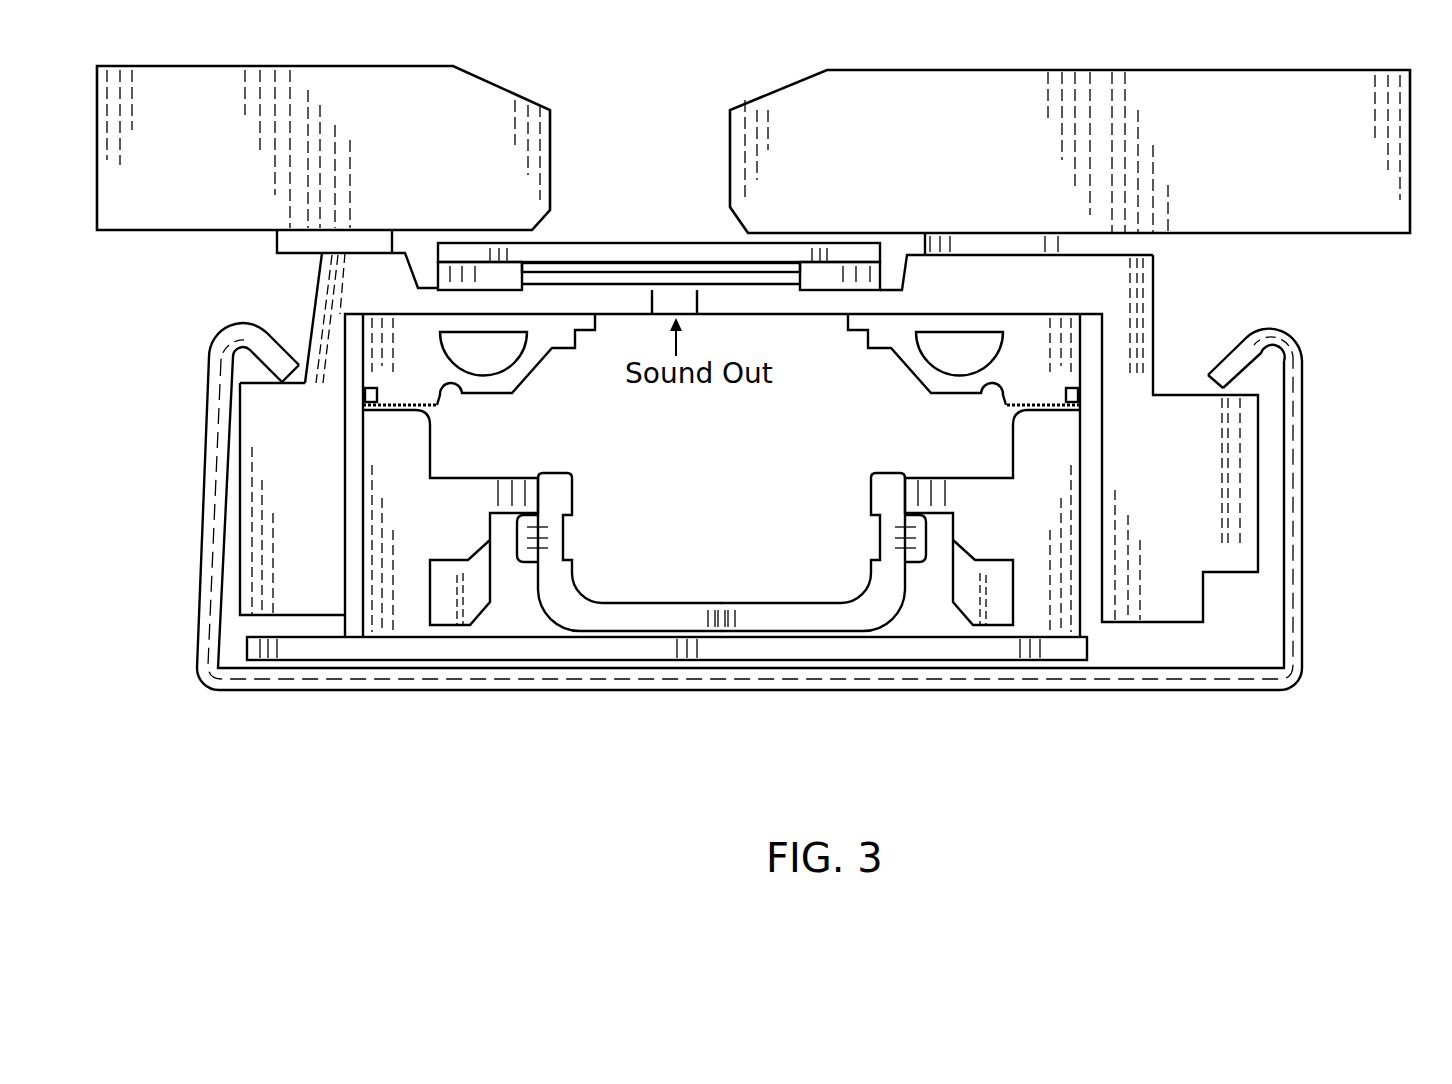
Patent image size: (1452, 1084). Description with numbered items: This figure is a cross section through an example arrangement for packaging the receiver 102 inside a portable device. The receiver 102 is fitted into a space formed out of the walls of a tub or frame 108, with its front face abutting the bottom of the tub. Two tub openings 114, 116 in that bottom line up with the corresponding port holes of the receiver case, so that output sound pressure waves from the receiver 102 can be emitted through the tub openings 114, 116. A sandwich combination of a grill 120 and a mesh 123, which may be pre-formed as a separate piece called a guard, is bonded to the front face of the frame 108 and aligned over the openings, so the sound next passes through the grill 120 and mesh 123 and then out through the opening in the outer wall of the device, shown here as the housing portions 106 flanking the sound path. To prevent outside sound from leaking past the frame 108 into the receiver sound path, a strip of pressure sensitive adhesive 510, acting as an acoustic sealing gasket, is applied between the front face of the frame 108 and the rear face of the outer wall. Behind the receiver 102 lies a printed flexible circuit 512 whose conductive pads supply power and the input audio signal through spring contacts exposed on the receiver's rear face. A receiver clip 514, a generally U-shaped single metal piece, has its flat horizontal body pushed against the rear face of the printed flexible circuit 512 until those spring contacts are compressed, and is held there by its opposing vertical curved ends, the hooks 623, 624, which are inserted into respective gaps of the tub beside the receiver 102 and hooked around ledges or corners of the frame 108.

The receiver 102 is at (762, 514).
The housing 106 is at (608, 158).
The tub or frame 108 is at (1243, 418).
The tub opening 114 is at (692, 167).
The tub opening 116 is at (686, 302).
The grill 120 is at (578, 253).
The mesh 123 is at (641, 277).
The pressure sensitive adhesive 510 is at (1055, 246).
The printed flexible circuit 512 is at (926, 656).
The receiver clip 514 is at (822, 476).
The hook 623 is at (233, 343).
The hook 624 is at (1270, 350).